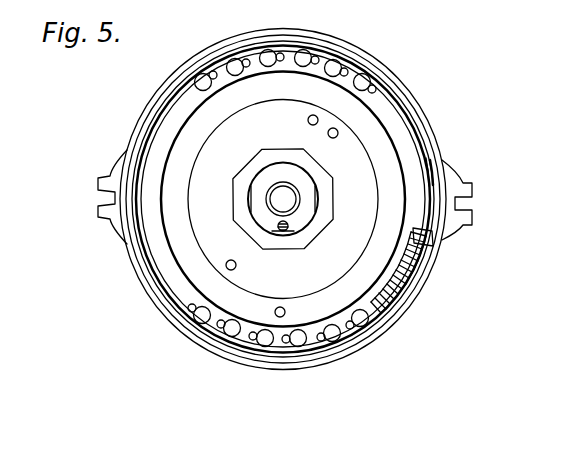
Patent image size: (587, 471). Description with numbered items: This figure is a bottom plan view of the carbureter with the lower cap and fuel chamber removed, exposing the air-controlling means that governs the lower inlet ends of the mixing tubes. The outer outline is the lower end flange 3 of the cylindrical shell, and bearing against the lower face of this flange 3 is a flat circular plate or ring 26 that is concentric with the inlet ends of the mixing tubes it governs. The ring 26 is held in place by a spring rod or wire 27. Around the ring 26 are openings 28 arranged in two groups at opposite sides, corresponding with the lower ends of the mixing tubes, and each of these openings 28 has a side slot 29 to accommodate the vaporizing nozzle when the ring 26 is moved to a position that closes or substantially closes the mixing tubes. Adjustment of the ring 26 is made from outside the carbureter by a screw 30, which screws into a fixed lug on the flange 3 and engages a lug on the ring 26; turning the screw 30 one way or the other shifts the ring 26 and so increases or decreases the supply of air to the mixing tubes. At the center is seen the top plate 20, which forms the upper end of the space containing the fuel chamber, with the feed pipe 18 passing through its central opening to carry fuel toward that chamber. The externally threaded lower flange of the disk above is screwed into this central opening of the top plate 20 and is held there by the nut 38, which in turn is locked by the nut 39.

The end flange 3 is at (127, 135).
The feed pipe 18 is at (295, 190).
The top plate 20 is at (283, 209).
The ring 26 is at (400, 125).
The spring rod 27 is at (432, 168).
The openings 28 is at (364, 75).
The side slots 29 is at (280, 53).
The screw 30 is at (408, 299).
The nut 38 is at (238, 203).
The nut 39 is at (262, 187).